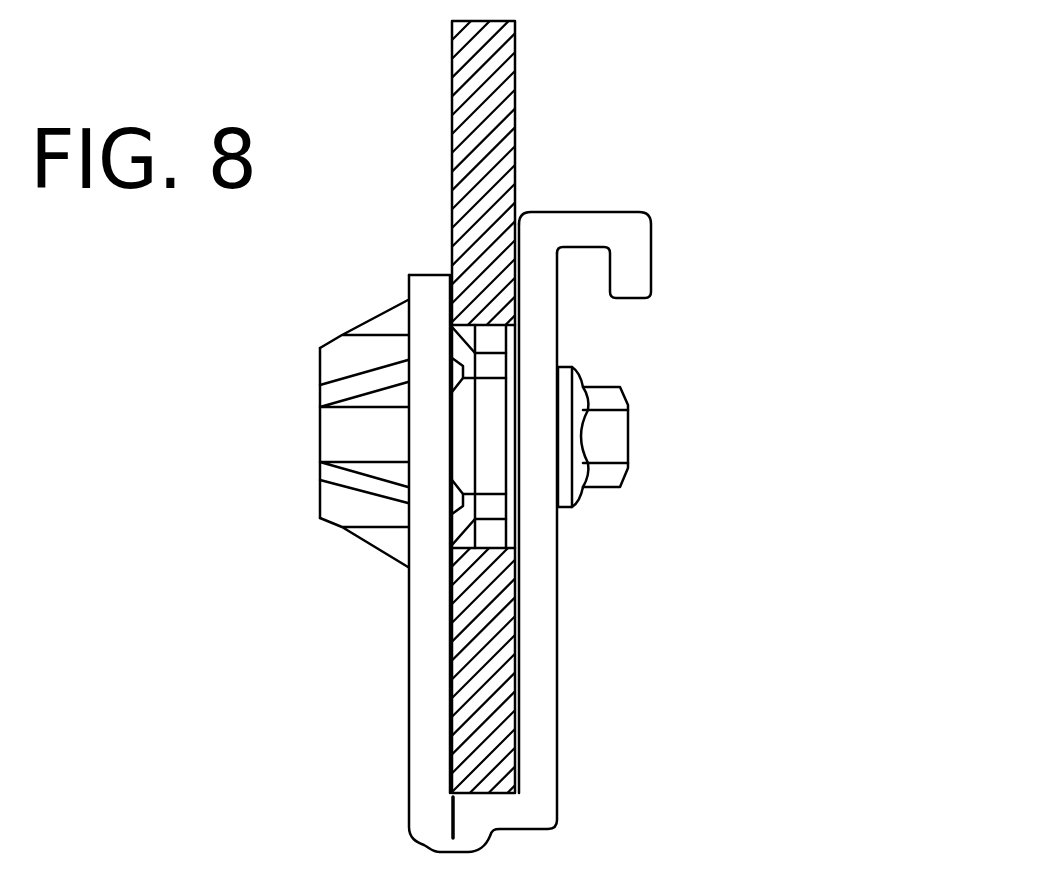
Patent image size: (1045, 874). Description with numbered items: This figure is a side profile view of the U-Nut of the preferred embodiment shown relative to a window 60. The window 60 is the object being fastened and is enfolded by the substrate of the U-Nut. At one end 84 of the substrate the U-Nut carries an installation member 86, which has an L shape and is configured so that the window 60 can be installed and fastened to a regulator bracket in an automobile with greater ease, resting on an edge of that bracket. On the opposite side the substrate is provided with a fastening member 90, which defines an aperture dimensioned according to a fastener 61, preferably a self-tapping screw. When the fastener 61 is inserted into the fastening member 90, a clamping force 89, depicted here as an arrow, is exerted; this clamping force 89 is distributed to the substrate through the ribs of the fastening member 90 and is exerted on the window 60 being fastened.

The window 60 is at (485, 645).
The fastener 61 is at (630, 408).
The end 84 is at (700, 245).
The installation member 86 is at (890, 187).
The clamping force 89 is at (390, 433).
The fastening member 90 is at (337, 510).